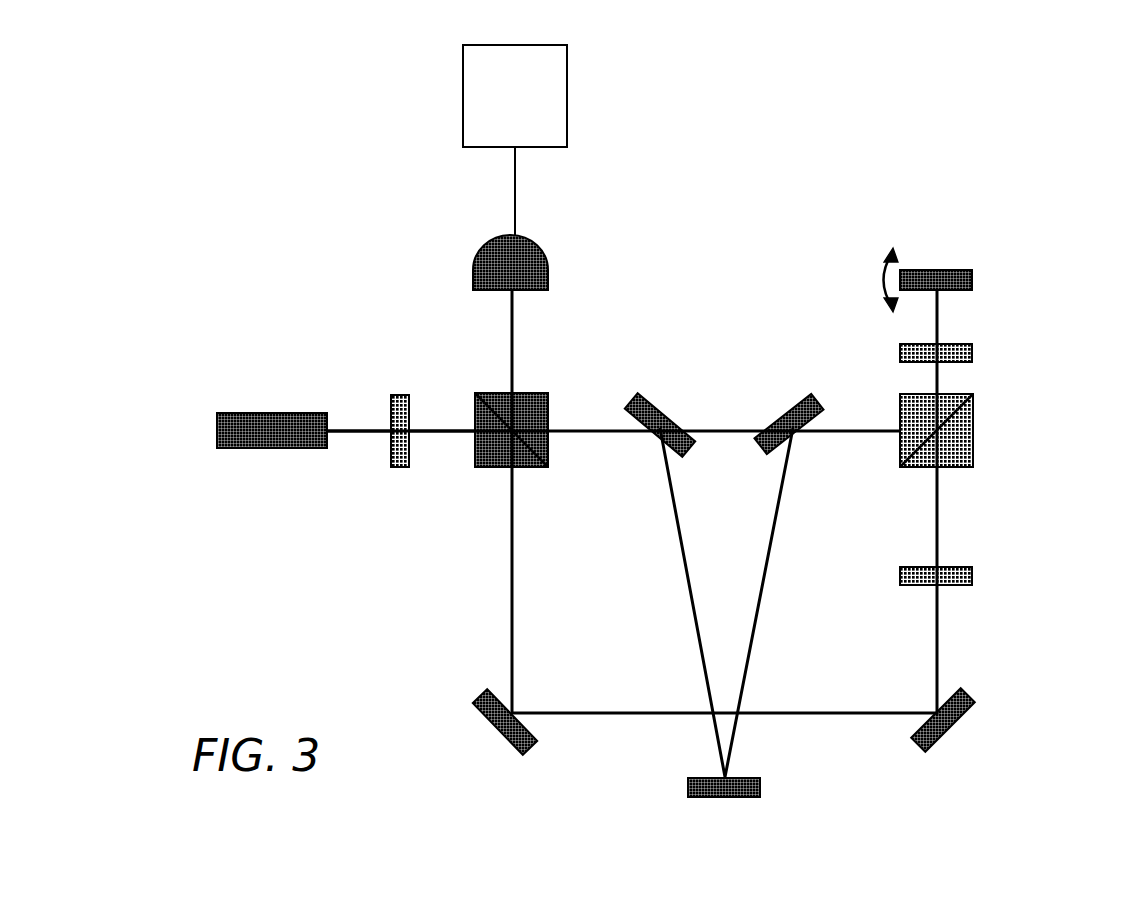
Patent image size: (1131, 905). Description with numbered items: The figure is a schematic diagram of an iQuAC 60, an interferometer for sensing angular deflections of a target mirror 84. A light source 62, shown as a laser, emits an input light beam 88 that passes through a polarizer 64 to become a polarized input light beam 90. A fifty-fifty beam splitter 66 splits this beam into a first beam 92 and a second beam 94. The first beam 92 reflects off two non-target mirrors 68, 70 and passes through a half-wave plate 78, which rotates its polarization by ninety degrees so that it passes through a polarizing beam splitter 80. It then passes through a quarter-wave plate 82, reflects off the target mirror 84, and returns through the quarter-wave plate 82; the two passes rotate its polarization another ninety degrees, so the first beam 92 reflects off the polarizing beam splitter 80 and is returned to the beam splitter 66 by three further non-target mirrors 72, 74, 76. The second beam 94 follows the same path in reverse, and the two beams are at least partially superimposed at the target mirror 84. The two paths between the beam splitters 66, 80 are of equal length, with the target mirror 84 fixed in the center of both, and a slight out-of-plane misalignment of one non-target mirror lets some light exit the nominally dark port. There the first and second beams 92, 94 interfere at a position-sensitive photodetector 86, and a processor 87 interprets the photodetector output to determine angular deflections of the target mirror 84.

The iQuAC 60 is at (349, 266).
The light source 62 is at (240, 412).
The polarizer 64 is at (392, 395).
The 50/50 beam splitter 66 is at (550, 393).
The non-target mirror 68 is at (493, 733).
The non-target mirror 70 is at (947, 723).
The non-target mirror 72 is at (790, 405).
The non-target mirror 74 is at (708, 797).
The non-target mirror 76 is at (668, 410).
The half-wave plate 78 is at (953, 587).
The polarizing beam splitter 80 is at (927, 470).
The quarter-wave plate 82 is at (912, 363).
The target mirror 84 is at (955, 270).
The position-sensitive photodetector 86 is at (491, 291).
The processor 87 is at (527, 105).
The input light beam 88 is at (362, 428).
The polarized input light beam 90 is at (443, 427).
The first beam 92 is at (695, 533).
The second beam 94 is at (510, 587).